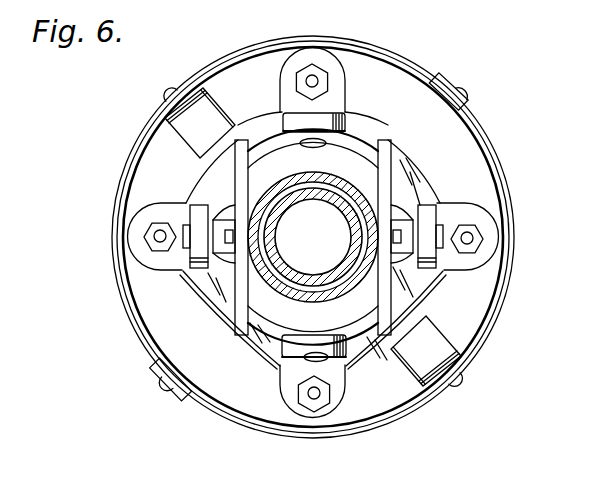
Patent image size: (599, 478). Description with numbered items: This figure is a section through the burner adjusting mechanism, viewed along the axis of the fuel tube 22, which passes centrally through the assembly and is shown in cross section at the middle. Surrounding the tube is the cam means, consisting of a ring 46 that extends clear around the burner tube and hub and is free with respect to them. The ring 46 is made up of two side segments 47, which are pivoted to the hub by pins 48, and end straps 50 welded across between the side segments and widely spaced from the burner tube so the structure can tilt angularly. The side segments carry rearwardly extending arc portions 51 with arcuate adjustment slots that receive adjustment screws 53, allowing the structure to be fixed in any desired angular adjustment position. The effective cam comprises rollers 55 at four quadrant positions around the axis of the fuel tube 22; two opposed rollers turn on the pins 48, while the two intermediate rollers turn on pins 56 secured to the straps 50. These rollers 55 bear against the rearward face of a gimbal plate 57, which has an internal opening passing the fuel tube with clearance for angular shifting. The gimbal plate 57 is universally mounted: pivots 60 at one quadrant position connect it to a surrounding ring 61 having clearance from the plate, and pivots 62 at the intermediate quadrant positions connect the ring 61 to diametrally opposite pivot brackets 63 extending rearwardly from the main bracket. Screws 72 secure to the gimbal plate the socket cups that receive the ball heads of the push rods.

The fuel tube 22 is at (338, 198).
The ring 46 is at (240, 198).
The side segments 47 is at (385, 153).
The pins 48 is at (443, 223).
The end straps 50 is at (360, 142).
The arc portions 51 is at (385, 291).
The adjustment screws 53 is at (397, 227).
The rollers 55 is at (338, 361).
The pins 56 is at (305, 364).
The gimbal plate 57 is at (410, 155).
The pivots 60 is at (453, 393).
The ring 61 is at (500, 281).
The pivots 62 is at (468, 82).
The pivot brackets 63 is at (442, 76).
The screws 72 is at (473, 233).